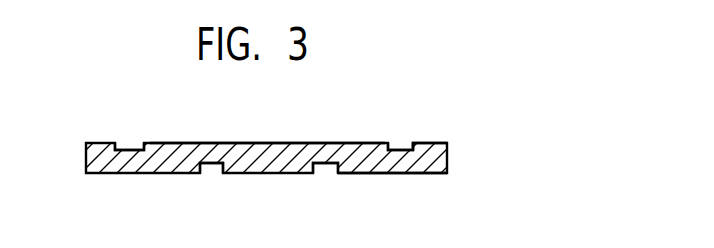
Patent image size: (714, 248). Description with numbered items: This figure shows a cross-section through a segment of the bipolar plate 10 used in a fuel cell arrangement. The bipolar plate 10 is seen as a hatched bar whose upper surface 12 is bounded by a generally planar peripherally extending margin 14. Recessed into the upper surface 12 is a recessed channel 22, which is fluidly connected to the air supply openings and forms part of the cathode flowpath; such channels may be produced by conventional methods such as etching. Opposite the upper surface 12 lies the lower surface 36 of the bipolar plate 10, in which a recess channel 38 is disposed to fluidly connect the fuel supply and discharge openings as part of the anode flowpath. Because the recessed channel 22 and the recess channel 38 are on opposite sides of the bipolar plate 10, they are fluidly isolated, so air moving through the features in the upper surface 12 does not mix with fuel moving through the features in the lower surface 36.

The bipolar plate 10 is at (455, 154).
The upper surface 12 is at (273, 142).
The generally planar peripherally extending margin 14 is at (434, 145).
The recessed channel 22 is at (130, 150).
The lower surface 36 is at (412, 173).
The recess channel 38 is at (213, 163).